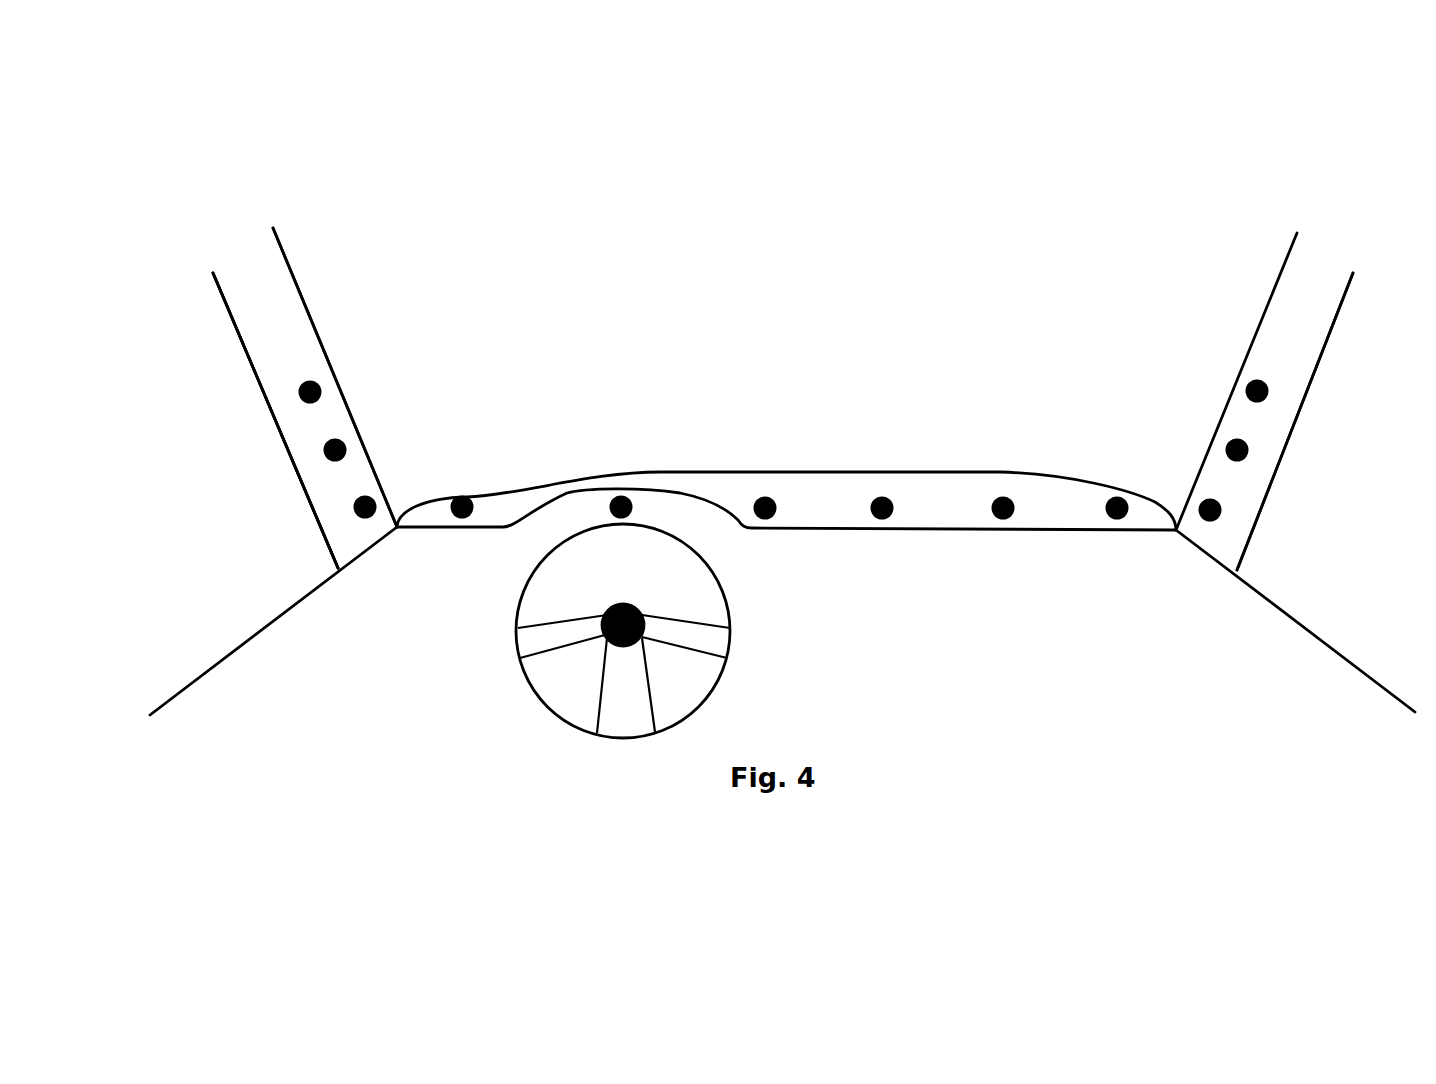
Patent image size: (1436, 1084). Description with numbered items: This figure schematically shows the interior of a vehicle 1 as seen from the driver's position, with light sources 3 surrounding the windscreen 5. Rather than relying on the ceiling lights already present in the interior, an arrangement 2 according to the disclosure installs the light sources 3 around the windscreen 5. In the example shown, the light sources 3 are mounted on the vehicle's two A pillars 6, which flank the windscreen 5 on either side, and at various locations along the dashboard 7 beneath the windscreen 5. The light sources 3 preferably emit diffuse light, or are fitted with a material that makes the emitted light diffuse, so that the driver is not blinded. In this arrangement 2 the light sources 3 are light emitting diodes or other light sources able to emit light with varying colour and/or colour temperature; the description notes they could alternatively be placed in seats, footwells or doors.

The vehicle 1 is at (162, 178).
The arrangement 2 is at (166, 412).
The light sources 3 is at (375, 506).
The windscreen 5 is at (873, 340).
The A pillars 6 is at (312, 505).
The dashboard 7 is at (1062, 513).